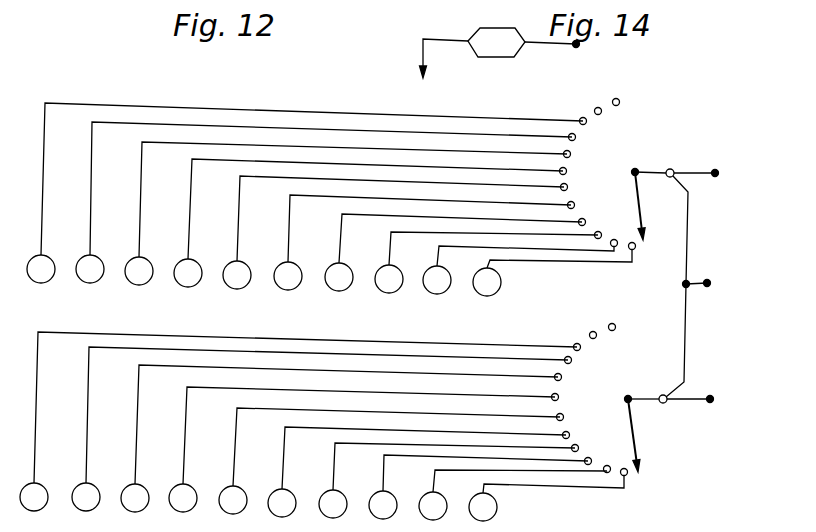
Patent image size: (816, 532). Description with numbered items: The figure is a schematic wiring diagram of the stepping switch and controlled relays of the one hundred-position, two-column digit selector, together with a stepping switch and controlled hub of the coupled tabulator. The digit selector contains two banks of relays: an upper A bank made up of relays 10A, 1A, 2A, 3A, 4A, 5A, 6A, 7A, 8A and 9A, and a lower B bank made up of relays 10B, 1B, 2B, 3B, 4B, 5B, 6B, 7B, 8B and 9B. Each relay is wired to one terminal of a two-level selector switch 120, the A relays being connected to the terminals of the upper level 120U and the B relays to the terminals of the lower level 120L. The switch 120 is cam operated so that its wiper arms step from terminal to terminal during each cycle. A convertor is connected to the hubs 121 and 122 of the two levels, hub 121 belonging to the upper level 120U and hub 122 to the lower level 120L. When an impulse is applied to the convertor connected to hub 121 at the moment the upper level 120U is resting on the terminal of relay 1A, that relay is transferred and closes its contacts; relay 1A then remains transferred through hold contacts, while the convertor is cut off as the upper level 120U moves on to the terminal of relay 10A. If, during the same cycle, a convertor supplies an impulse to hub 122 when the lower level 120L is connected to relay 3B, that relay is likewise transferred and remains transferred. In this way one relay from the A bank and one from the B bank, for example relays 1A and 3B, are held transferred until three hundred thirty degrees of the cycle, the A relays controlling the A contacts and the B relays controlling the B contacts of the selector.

The two-level selector switch 120 is at (711, 254).
The hub 121 is at (716, 167).
The hub 122 is at (715, 390).
The upper level of selector switch 120U is at (642, 201).
The lower level of selector switch 120L is at (637, 440).
The relay 10A is at (307, 193).
The relay 1A is at (326, 202).
The relay 2A is at (348, 213).
The relay 3A is at (370, 223).
The relay 4A is at (395, 232).
The relay 5A is at (424, 242).
The relay 6A is at (455, 252).
The relay 7A is at (488, 263).
The relay 8A is at (520, 267).
The relay 9A is at (554, 270).
The relay 10B is at (300, 421).
The relay 1B is at (322, 429).
The relay 2B is at (341, 438).
The relay 3B is at (364, 449).
The relay 4B is at (391, 461).
The relay 5B is at (419, 472).
The relay 6B is at (449, 480).
The relay 7B is at (480, 487).
The relay 8B is at (515, 493).
The relay 9B is at (548, 495).